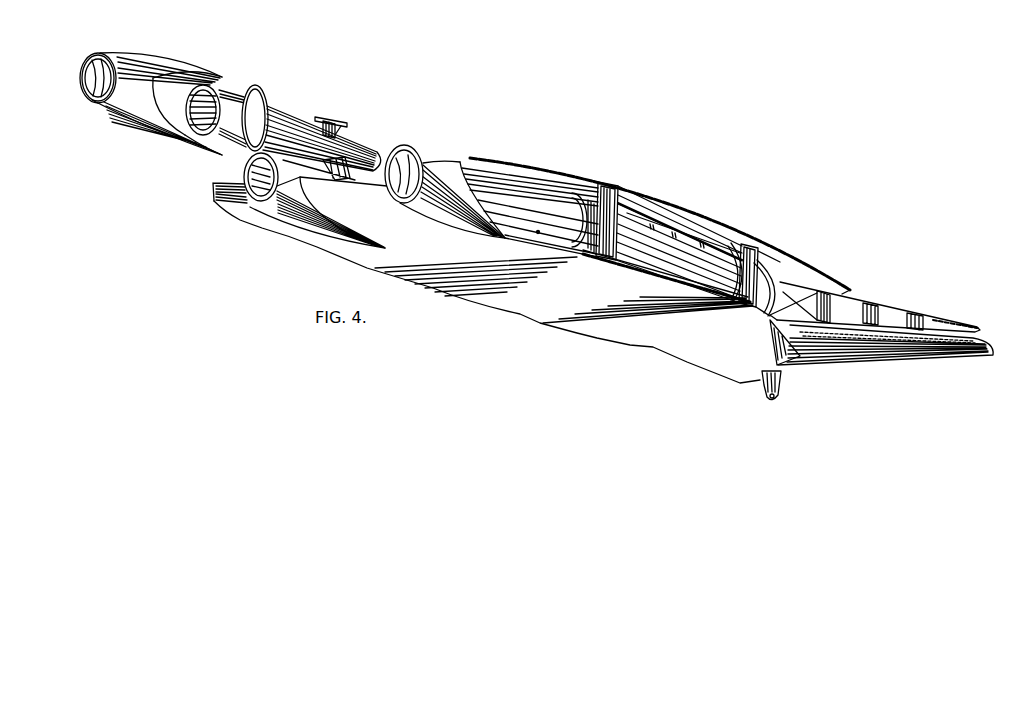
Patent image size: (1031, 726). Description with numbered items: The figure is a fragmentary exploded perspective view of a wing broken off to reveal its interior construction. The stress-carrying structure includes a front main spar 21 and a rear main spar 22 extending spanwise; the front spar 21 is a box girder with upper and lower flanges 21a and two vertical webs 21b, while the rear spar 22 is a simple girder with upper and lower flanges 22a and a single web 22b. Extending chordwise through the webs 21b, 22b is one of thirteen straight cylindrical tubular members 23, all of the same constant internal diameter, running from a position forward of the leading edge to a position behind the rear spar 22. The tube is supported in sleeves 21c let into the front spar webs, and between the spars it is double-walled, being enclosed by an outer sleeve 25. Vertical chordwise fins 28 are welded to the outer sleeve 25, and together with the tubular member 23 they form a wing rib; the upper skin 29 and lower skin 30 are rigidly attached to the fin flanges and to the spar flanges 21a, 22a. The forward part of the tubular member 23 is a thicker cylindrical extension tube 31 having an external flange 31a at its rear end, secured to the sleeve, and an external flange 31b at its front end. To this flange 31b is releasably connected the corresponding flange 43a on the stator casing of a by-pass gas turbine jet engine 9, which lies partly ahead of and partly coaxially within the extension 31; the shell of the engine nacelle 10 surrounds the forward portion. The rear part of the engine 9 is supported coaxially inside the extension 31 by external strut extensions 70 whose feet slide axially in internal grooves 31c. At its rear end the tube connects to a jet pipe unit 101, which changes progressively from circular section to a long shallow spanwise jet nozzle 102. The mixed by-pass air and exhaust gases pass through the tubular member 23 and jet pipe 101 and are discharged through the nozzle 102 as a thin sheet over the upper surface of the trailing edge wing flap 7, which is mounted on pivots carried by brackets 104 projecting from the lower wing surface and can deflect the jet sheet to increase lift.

The engine nacelle 10 is at (145, 54).
The external flange 43a is at (268, 88).
The by-pass gas turbine jet engine 9 is at (279, 104).
The external strut extensions 70 is at (345, 130).
The cylindrical extension tube 31 is at (511, 218).
The external flange 31a is at (568, 218).
The external flange 31b is at (408, 150).
The internal axially extending grooves 31c is at (387, 190).
The front main spar 21 is at (622, 207).
The upper and lower flanges 21a is at (601, 183).
The vertical webs 21b is at (617, 243).
The sleeves 21c is at (569, 243).
The outer sleeve 25 is at (682, 265).
The fins 28 is at (693, 237).
The upper skin 29 is at (688, 212).
The lower skin 30 is at (668, 278).
The rear main spar 22 is at (750, 244).
The upper and lower flanges 22a is at (772, 250).
The web 22b is at (741, 277).
The tubular member 23 is at (787, 273).
The jet pipe unit 101 is at (880, 307).
The jet nozzle 102 is at (967, 333).
The trailing edge wing flap 7 is at (907, 358).
The brackets 104 is at (779, 390).